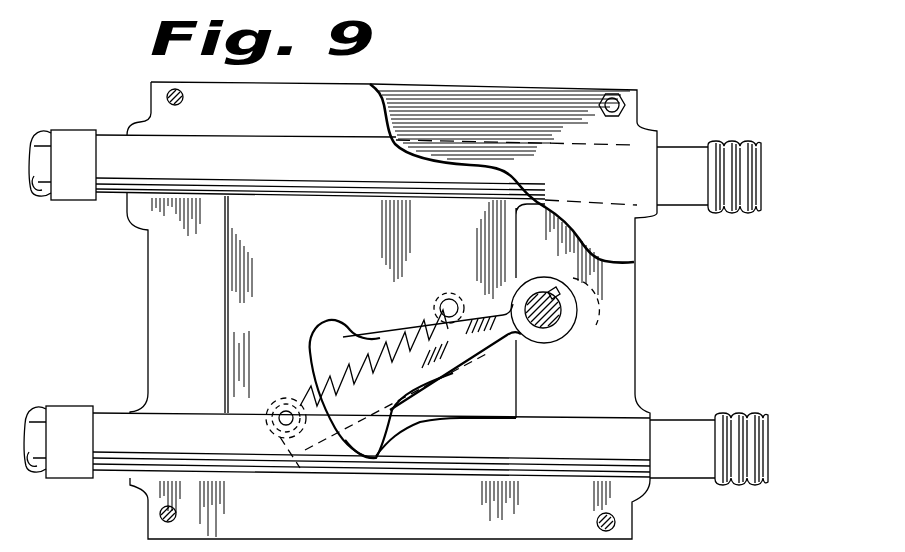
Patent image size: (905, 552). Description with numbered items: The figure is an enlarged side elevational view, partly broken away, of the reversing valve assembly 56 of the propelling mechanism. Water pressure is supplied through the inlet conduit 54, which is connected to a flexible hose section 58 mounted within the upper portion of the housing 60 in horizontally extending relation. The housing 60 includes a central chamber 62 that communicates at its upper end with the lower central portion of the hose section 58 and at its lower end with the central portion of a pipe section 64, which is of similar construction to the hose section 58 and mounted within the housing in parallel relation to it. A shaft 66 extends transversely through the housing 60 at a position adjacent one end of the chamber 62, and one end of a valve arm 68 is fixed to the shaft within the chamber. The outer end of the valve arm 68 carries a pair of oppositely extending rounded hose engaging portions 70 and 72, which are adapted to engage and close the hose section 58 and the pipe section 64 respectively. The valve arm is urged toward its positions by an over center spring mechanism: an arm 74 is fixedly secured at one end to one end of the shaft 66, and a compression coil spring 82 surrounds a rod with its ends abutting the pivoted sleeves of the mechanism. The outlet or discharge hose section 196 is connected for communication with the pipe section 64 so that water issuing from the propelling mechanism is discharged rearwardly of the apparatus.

The conduit 54 is at (42, 133).
The reversing valve assembly 56 is at (622, 87).
The flexible hose section 58 is at (290, 120).
The housing 60 is at (505, 100).
The central chamber 62 is at (228, 307).
The pipe section 64 is at (450, 460).
The shaft 66 is at (556, 330).
The valve arm 68 is at (458, 362).
The hose engaging portion 70 is at (330, 322).
The hose engaging portion 72 is at (378, 470).
The arm 74 is at (298, 458).
The compression coil spring 82 is at (348, 340).
The outlet or discharge hose section 196 is at (50, 384).